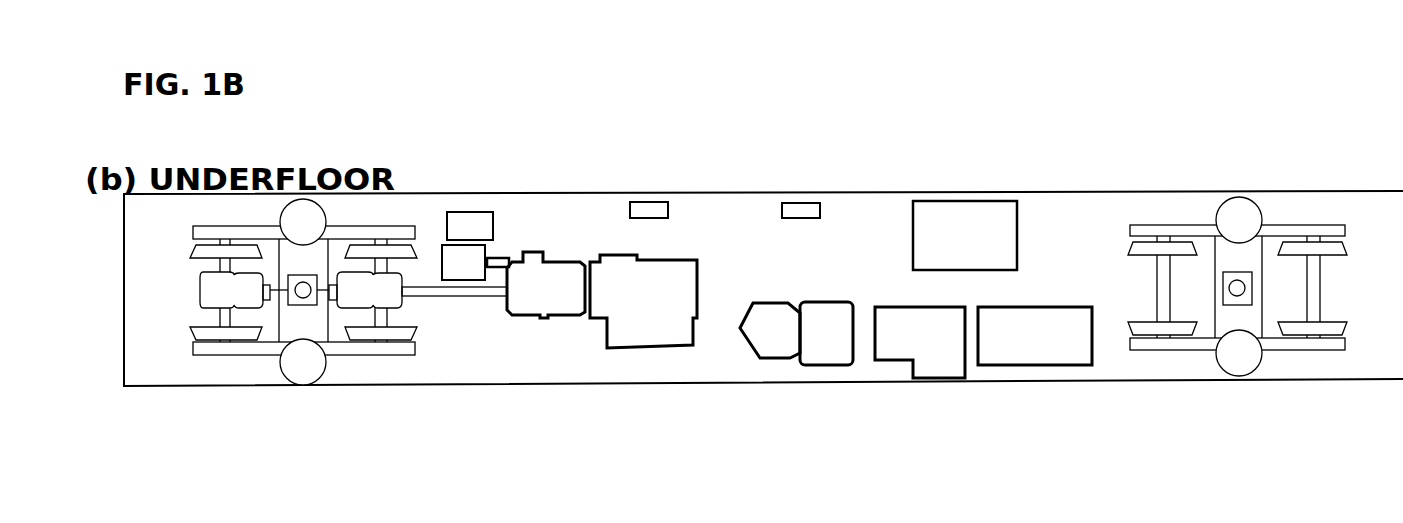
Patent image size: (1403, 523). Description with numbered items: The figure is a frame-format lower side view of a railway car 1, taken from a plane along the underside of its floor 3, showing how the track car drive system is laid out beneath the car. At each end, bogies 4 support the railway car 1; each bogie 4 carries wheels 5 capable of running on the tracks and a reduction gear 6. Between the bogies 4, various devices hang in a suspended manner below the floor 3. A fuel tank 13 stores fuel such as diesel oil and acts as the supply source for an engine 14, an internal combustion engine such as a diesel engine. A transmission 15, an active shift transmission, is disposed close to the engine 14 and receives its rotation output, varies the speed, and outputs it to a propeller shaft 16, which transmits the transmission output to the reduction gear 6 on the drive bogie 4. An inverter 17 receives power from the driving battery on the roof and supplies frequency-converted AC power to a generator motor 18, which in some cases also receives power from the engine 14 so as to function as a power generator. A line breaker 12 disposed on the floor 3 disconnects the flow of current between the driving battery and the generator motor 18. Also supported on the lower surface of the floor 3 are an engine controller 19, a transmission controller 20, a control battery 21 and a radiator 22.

The railway car 1 is at (1356, 191).
The floor 3 is at (1120, 200).
The bogie 4 is at (768, 305).
The wheel 5 is at (195, 253).
The reduction gear 6 is at (255, 306).
The line breaker 12 is at (1088, 366).
The fuel tank 13 is at (993, 201).
The engine 14 is at (650, 348).
The transmission 15 is at (560, 318).
The propeller shaft 16 is at (463, 296).
The inverter 17 is at (940, 362).
The generator motor 18 is at (447, 257).
The engine controller 19 is at (657, 210).
The transmission controller 20 is at (798, 207).
The control battery 21 is at (467, 222).
The radiator 22 is at (817, 360).